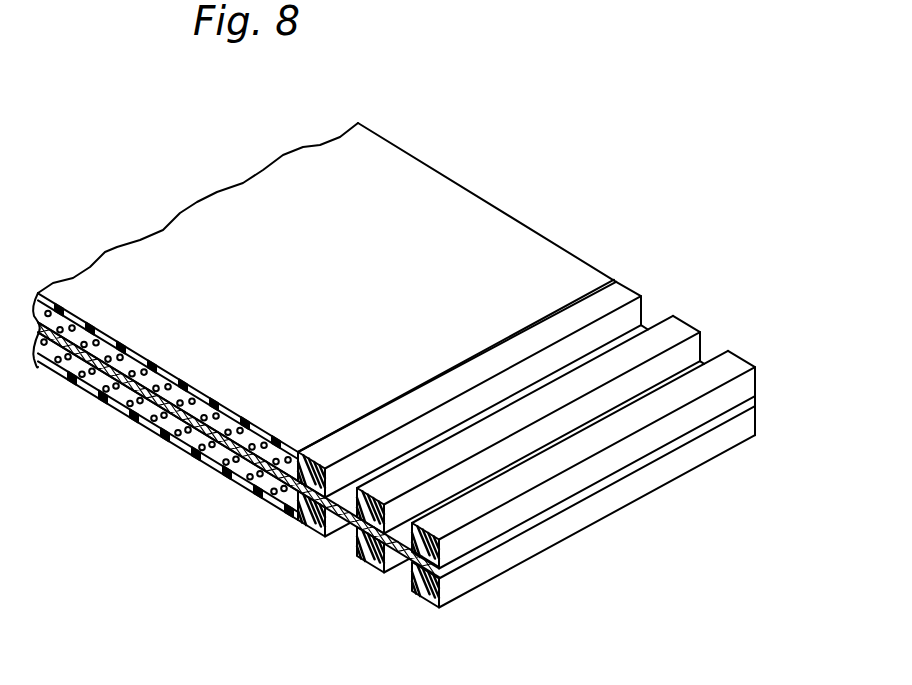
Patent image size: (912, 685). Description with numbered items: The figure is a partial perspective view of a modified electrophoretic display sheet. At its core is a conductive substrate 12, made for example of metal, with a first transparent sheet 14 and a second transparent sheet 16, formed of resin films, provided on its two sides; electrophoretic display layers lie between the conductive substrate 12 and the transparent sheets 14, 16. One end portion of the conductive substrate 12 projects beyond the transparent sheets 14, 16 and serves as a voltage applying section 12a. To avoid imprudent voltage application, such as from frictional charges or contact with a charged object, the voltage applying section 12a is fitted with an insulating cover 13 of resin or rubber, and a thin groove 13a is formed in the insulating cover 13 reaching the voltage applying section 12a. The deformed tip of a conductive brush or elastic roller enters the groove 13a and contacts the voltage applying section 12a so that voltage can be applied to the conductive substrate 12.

The first transparent sheet 14 is at (105, 265).
The insulating cover 13 is at (686, 320).
The thin groove 13a is at (706, 358).
The second transparent sheet 16 is at (80, 393).
The conductive substrate 12 is at (205, 433).
The voltage applying section 12a is at (335, 535).